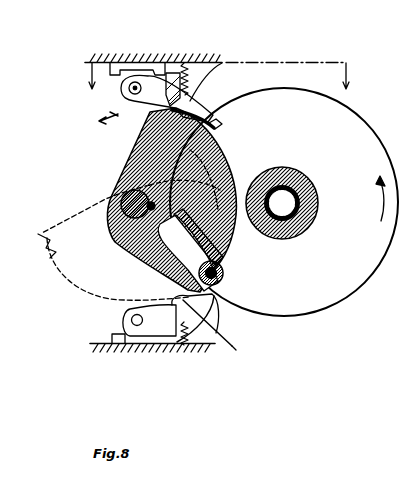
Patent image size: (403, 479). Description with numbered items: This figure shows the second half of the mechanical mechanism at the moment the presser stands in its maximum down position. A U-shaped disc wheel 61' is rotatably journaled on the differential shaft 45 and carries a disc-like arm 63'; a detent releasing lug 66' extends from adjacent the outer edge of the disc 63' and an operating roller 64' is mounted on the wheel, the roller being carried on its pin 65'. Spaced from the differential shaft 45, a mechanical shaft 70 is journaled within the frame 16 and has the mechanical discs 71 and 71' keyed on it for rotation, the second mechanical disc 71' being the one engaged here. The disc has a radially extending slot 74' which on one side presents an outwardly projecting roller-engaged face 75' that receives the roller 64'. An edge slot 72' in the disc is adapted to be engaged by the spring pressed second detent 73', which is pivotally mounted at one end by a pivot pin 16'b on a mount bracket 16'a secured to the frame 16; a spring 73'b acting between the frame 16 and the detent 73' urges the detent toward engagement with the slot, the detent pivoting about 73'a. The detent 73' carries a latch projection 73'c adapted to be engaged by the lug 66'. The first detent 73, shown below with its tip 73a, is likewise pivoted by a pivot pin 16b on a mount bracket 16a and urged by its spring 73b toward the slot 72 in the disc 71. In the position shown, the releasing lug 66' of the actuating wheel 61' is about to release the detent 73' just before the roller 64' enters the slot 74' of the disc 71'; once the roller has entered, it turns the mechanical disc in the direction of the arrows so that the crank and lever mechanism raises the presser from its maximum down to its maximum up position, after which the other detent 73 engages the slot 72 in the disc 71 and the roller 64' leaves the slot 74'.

The frame 16 is at (218, 53).
The mount bracket 16'a is at (121, 57).
The pivot pin 16'b is at (162, 64).
The mount bracket 16a is at (116, 338).
The pivot pin 16b is at (128, 320).
The differential shaft 45 is at (292, 205).
The U-shaped disc wheel 61' is at (282, 196).
The disc-like arm 63' is at (284, 213).
The operating roller 64' is at (213, 270).
The pivot pin 65' is at (231, 290).
The detent releasing lug 66' is at (201, 200).
The mechanical shaft 70 is at (122, 197).
The mechanical disc 71 is at (113, 323).
The second mechanical disc 71' is at (103, 253).
The slot 72 is at (100, 247).
The slot 72' is at (240, 39).
The detent 73 is at (212, 320).
The pawl tip 73a is at (225, 357).
The spring 73b is at (174, 344).
The second detent 73' is at (211, 78).
The pawl pivot 73'a is at (167, 98).
The spring 73'b is at (199, 66).
The latch projection 73'c is at (232, 125).
The slot 74' is at (141, 277).
The roller-engaged face 75' is at (250, 283).